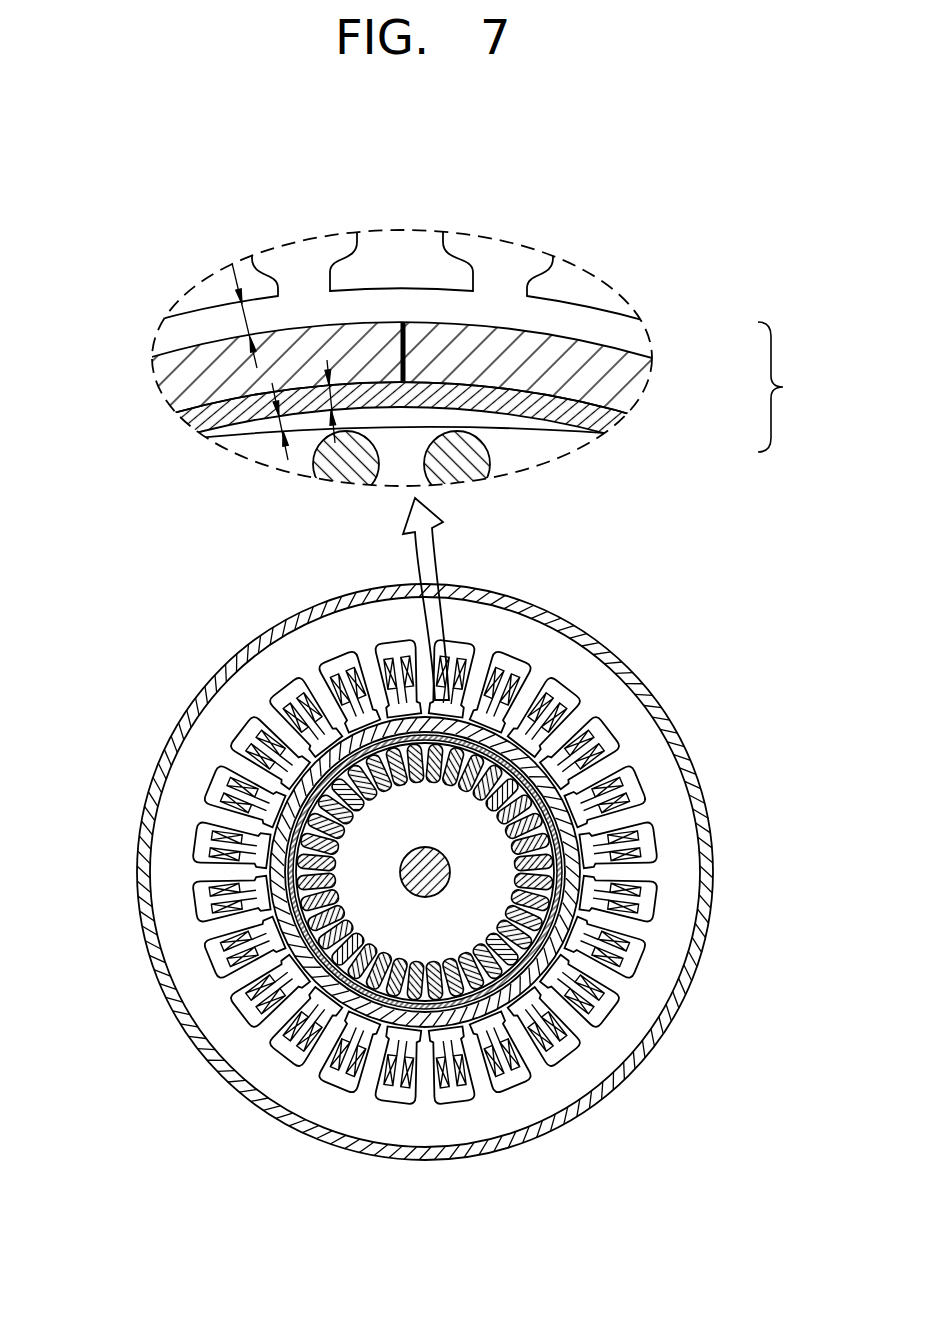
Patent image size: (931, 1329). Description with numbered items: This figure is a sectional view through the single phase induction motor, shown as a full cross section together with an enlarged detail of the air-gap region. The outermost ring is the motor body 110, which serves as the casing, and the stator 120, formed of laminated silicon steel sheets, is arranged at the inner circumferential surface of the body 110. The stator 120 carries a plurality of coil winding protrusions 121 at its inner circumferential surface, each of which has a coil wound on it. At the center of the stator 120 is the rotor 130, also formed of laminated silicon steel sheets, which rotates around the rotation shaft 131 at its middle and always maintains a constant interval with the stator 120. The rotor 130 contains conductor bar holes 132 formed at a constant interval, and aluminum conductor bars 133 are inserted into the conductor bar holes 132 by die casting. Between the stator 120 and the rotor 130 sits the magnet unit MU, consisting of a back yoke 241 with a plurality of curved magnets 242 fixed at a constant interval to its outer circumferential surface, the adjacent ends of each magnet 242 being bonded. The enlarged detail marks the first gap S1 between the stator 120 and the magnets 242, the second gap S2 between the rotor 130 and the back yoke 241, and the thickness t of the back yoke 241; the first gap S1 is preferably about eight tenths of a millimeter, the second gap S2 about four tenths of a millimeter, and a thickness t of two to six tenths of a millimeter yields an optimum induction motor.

The motor body 110 is at (693, 760).
The stator 120 is at (672, 817).
The coil winding protrusion 121 is at (557, 283).
The rotor 130 is at (357, 875).
The rotation shaft 131 is at (448, 867).
The conductor bar hole 132 is at (337, 933).
The conductor bar 133 is at (322, 970).
The back yoke 241 is at (470, 737).
The magnet 242 is at (578, 806).
The magnet unit MU is at (792, 387).
The first gap S1 is at (240, 322).
The second gap S2 is at (273, 428).
The thickness of the back yoke t is at (313, 412).